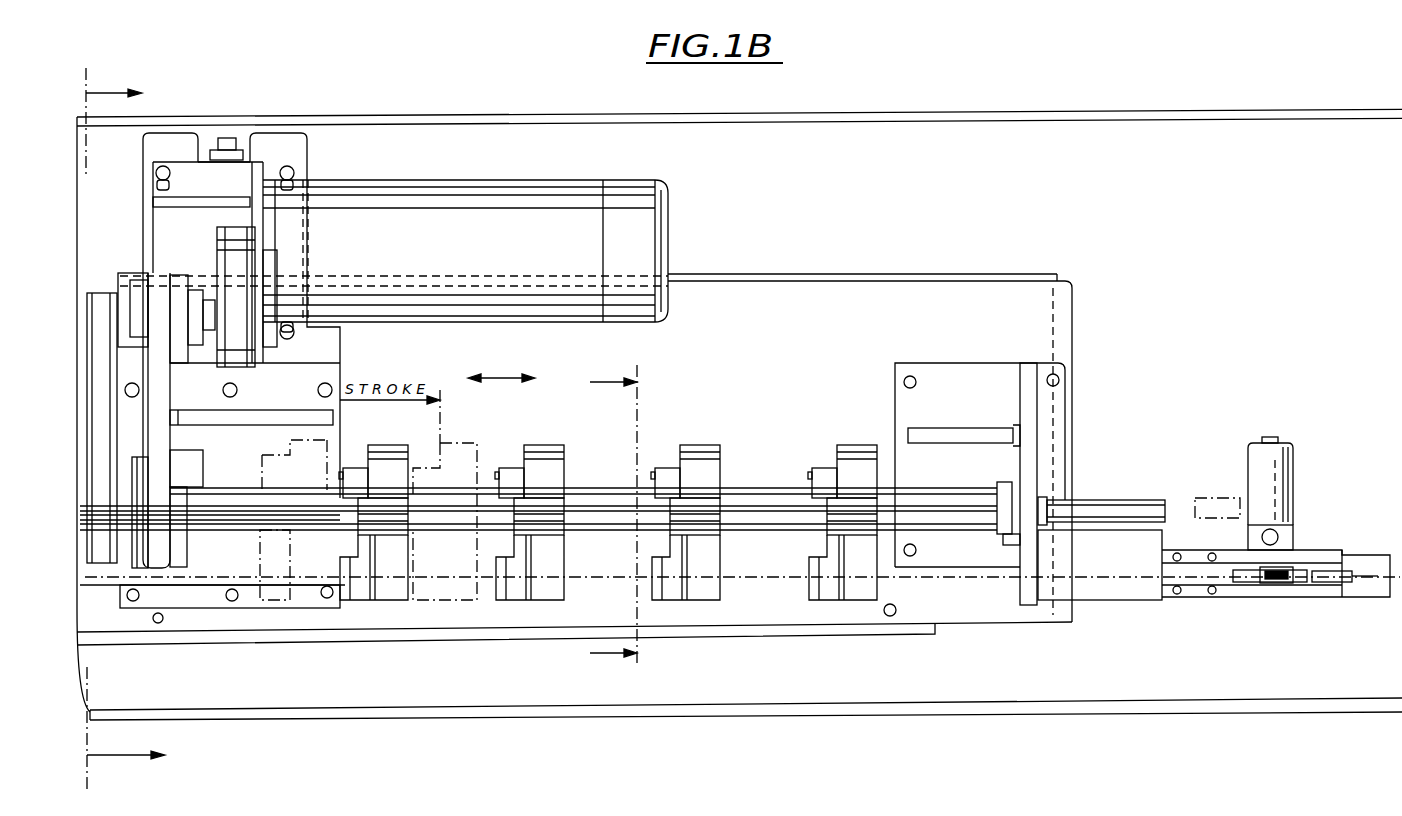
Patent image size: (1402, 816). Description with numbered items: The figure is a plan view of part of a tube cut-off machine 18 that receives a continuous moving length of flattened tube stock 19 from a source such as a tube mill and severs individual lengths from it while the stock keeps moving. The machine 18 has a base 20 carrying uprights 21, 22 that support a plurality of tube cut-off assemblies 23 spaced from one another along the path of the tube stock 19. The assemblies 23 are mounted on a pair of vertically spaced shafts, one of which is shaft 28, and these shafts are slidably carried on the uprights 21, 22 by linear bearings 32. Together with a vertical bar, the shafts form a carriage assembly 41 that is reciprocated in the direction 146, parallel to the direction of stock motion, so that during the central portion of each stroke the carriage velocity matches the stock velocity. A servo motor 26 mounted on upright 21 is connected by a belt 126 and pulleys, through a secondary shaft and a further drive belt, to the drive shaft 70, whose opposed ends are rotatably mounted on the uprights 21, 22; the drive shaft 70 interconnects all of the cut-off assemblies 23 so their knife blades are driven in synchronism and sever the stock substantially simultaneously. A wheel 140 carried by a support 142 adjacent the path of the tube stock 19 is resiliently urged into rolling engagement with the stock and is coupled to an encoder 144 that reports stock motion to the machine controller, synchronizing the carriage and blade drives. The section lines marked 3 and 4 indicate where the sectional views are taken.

The cut-off machine 18 is at (920, 142).
The tube stock 19 is at (1118, 600).
The base 20 is at (997, 293).
The upright 21 is at (160, 568).
The upright 22 is at (1027, 424).
The tube cut-off assemblies 23 is at (391, 452).
The servo motor 26 is at (526, 193).
The shaft 28 is at (1127, 508).
The linear bearings 32 is at (1005, 538).
The carriage assembly 41 is at (764, 449).
The drive shaft 70 is at (602, 494).
The belt 126 is at (230, 251).
The wheel 140 is at (1285, 568).
The support 142 is at (1315, 588).
The encoder 144 is at (1258, 462).
The direction 146 is at (512, 361).
The section line 3- 3 is at (140, 429).
The section line 4- 4 is at (613, 518).